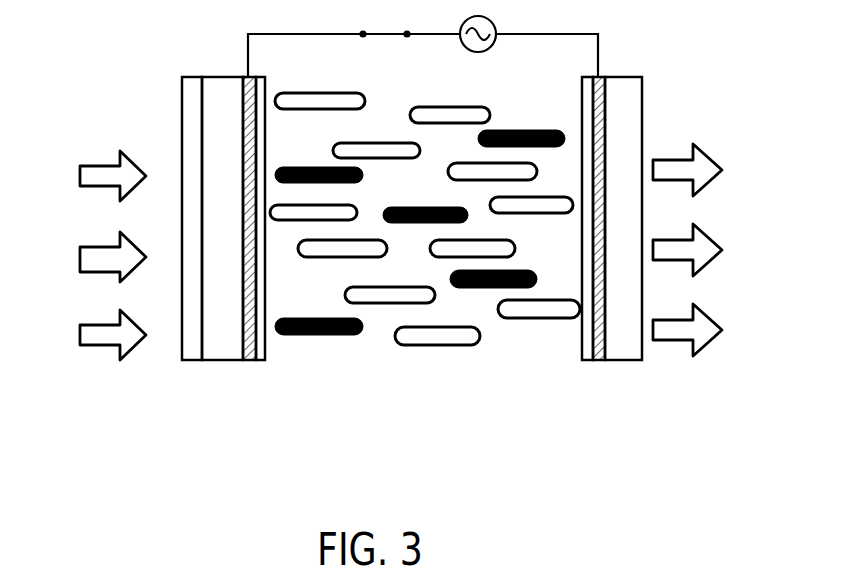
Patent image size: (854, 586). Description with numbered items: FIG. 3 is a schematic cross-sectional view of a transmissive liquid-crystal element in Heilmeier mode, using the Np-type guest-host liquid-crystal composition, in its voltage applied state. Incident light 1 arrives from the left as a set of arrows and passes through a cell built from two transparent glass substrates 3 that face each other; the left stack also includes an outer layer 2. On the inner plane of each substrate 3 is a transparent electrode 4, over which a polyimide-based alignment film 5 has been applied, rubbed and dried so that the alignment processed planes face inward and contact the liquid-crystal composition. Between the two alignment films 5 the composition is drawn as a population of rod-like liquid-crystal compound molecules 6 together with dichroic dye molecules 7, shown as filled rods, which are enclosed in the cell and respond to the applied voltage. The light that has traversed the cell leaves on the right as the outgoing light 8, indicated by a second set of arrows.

The incident light 1 is at (92, 345).
The substrate 2 is at (192, 360).
The transparent glass substrate 3 is at (223, 360).
The transparent electrode 4 is at (245, 360).
The alignment film 5 is at (263, 360).
The liquid-crystal compound molecule 6 is at (337, 335).
The dichroic dye molecule 7 is at (440, 345).
The transmitted light 8 is at (672, 342).